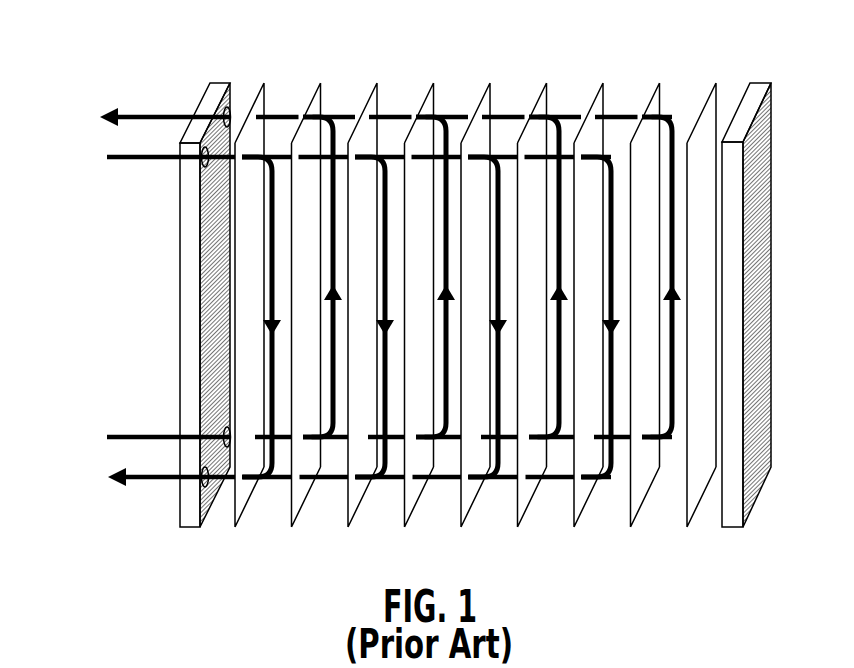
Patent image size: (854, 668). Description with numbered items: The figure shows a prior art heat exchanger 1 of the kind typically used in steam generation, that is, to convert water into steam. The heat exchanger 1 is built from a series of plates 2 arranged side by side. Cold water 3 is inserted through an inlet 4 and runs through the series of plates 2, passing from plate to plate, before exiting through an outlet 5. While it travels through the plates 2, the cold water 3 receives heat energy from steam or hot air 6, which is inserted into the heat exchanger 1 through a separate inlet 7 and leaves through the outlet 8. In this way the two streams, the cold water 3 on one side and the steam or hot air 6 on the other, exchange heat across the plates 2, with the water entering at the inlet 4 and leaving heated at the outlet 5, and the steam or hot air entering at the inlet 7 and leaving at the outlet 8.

The heat exchanger 1 is at (108, 33).
The plates 2 is at (377, 83).
The cold water 3 is at (453, 440).
The inlet 4 is at (221, 425).
The outlet 5 is at (234, 108).
The steam or hot air 6 is at (570, 157).
The inlet 7 is at (200, 168).
The outlet 8 is at (200, 488).